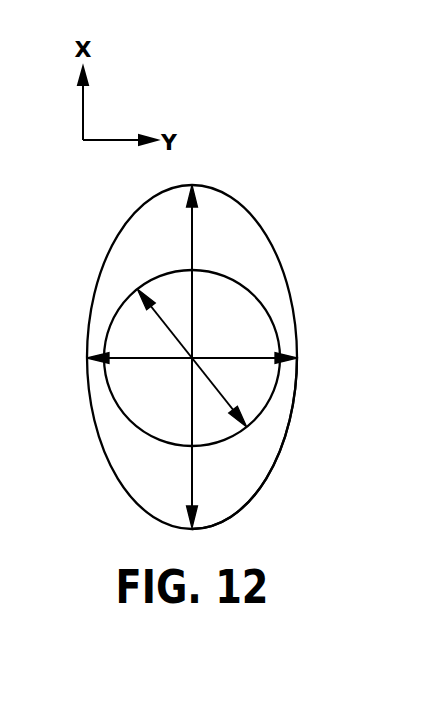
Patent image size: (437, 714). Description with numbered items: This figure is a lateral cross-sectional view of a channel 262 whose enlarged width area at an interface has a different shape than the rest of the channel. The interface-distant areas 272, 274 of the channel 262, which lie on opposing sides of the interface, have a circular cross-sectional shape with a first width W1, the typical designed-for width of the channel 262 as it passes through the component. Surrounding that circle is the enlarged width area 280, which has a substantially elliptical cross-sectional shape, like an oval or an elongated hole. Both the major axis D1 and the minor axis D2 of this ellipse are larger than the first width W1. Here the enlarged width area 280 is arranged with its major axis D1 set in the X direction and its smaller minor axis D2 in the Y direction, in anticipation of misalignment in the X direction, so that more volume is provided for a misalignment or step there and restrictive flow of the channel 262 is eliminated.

The channel 262 is at (268, 215).
The interface-distant area 272 is at (248, 334).
The interface-distant area 274 is at (243, 327).
The enlarged width area 280 is at (237, 478).
The major axis D1 is at (193, 243).
The minor axis D2 is at (140, 358).
The first width W1 is at (218, 392).